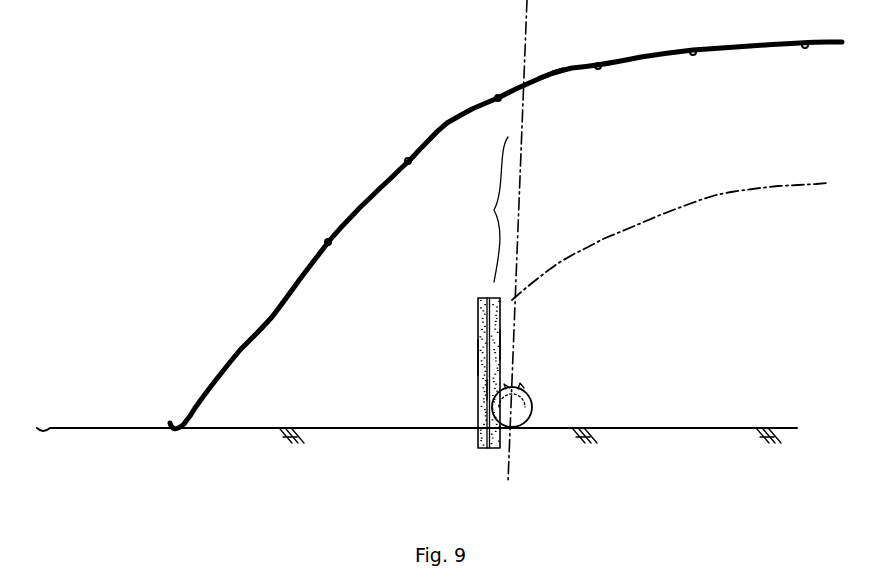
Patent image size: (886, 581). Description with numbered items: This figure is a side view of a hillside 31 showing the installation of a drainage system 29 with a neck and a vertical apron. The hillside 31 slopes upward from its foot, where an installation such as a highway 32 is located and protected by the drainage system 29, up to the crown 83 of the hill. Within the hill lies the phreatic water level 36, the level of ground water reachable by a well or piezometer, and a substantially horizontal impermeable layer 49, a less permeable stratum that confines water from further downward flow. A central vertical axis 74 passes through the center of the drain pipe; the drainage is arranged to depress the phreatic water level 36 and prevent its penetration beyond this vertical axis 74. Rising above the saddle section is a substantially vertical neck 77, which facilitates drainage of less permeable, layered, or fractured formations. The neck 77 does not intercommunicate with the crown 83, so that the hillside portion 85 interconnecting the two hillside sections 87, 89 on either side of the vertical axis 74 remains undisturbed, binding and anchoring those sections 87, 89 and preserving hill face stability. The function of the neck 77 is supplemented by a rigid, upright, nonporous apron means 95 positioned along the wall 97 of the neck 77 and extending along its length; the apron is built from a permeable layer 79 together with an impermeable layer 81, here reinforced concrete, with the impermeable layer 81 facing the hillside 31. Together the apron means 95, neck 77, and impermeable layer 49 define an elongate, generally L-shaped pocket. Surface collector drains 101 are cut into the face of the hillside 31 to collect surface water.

The drainage system 29 is at (531, 403).
The hillside 31 is at (450, 122).
The highway 32 is at (100, 427).
The phreatic water level 36 is at (655, 212).
The impermeable layer 49 is at (696, 428).
The vertical axis 74 is at (522, 185).
The neck 77 is at (523, 385).
The permeable layer 79 is at (500, 345).
The impermeable layer 81 is at (481, 357).
The crown 83 is at (553, 72).
The hillside portion 85 is at (493, 210).
The hillside section 87 is at (416, 250).
The hillside section 89 is at (718, 135).
The apron means 95 is at (480, 327).
The wall 97 is at (497, 390).
The surface collector drains 101 is at (408, 160).